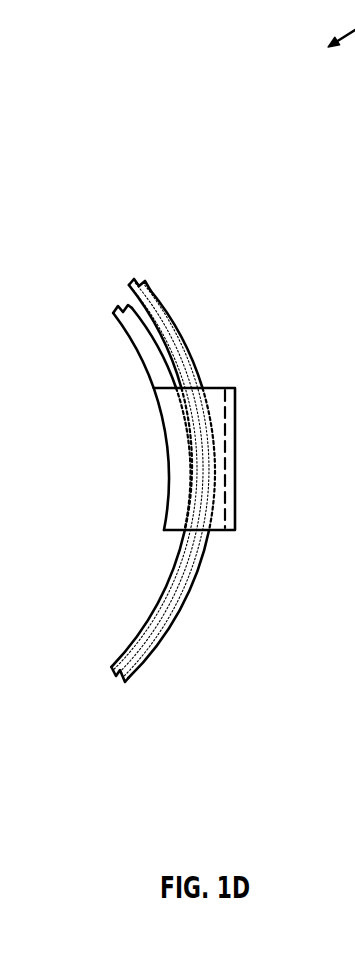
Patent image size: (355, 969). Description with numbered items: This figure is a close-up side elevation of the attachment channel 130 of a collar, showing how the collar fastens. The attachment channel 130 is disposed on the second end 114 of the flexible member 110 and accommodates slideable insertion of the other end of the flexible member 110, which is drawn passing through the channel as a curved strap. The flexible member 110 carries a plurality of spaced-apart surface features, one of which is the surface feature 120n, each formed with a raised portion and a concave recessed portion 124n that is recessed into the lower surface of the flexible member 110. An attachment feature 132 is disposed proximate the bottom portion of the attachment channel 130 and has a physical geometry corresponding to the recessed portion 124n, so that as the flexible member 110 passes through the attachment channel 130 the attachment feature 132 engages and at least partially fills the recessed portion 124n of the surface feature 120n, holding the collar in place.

The flexible member 110 is at (186, 614).
The second end of the flexible member 114 is at (164, 530).
The surface feature 120n is at (229, 432).
The recessed portion of the surface feature 124n is at (205, 443).
The attachment channel 130 is at (246, 480).
The attachment feature 132 is at (193, 448).